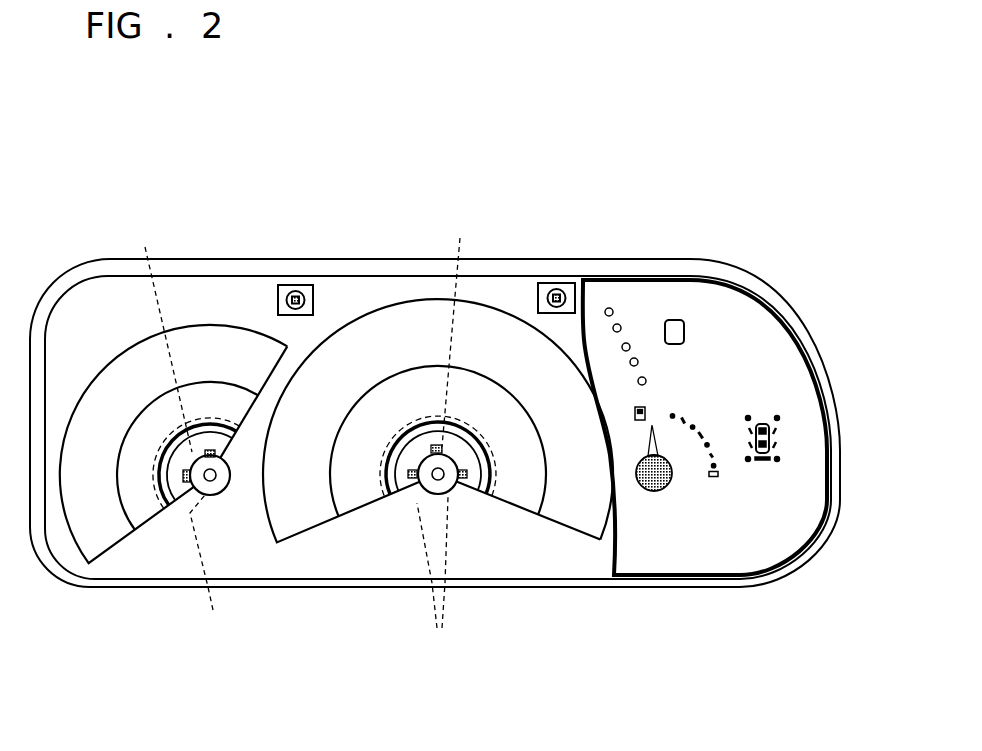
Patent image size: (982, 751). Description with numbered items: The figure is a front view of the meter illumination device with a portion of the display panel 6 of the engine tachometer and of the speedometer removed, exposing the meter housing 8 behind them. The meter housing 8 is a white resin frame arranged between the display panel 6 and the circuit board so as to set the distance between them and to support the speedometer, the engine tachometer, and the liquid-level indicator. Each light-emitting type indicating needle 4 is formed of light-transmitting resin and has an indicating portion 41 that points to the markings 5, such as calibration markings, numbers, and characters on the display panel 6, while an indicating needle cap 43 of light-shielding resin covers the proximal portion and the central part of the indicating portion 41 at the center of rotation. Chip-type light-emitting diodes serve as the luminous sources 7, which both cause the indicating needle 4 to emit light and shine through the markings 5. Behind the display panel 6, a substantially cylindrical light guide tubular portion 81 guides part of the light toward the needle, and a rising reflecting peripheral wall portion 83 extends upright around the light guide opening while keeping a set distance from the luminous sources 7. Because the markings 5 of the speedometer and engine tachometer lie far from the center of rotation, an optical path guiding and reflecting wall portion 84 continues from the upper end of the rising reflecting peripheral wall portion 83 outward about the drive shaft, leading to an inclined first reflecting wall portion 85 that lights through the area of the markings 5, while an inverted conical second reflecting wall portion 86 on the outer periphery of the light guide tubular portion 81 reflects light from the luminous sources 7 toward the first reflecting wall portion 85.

The light-emitting type indicating needle 4 is at (689, 441).
The indicating portion 41 is at (643, 478).
The indicating needle cap 43 is at (658, 445).
The markings 5 is at (707, 428).
The display panel 6 is at (750, 535).
The luminous sources 7 is at (304, 433).
The meter housing 8 is at (67, 343).
The light guide tubular portion 81 is at (188, 465).
The rising reflecting peripheral wall portion 83 is at (207, 433).
The optical path guiding and reflecting wall portion 84 is at (138, 501).
The first reflecting wall portion 85 is at (90, 478).
The second reflecting wall portion 86 is at (228, 442).